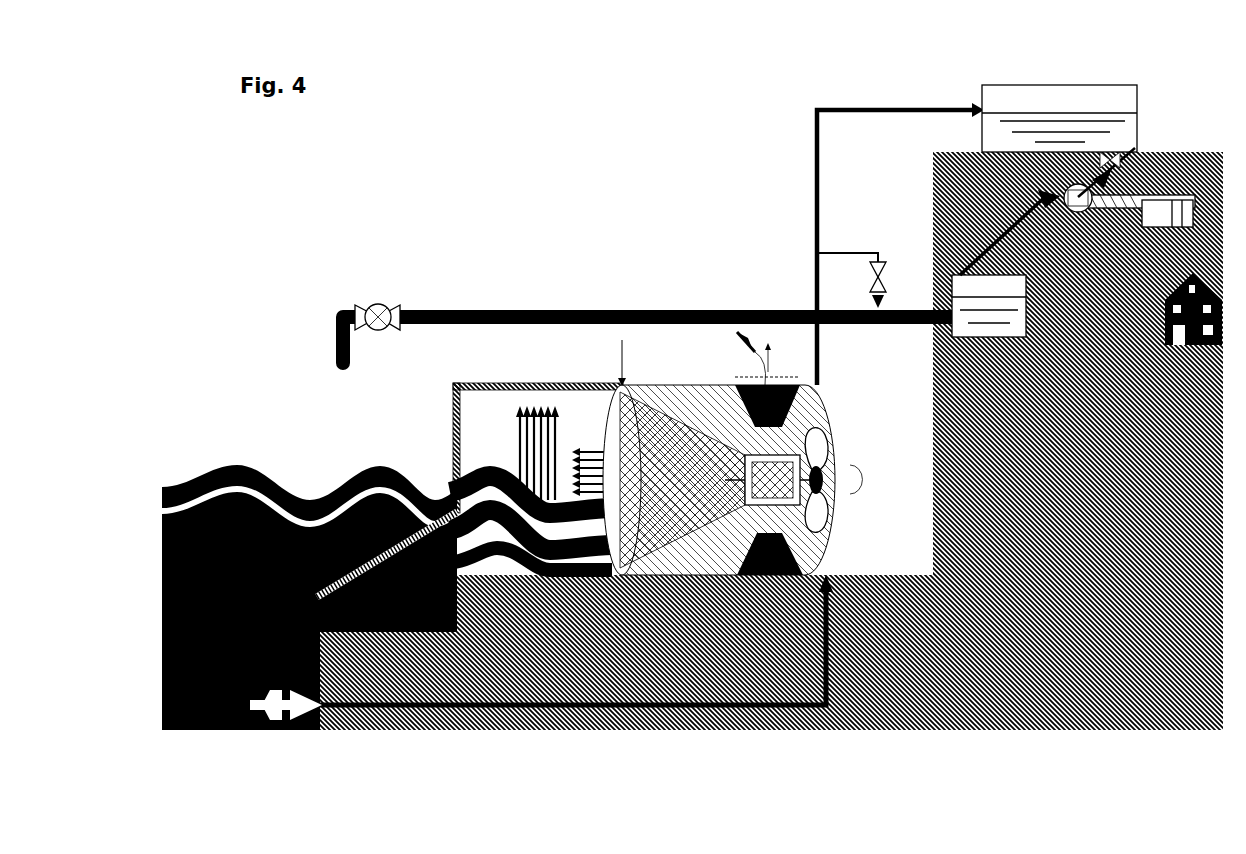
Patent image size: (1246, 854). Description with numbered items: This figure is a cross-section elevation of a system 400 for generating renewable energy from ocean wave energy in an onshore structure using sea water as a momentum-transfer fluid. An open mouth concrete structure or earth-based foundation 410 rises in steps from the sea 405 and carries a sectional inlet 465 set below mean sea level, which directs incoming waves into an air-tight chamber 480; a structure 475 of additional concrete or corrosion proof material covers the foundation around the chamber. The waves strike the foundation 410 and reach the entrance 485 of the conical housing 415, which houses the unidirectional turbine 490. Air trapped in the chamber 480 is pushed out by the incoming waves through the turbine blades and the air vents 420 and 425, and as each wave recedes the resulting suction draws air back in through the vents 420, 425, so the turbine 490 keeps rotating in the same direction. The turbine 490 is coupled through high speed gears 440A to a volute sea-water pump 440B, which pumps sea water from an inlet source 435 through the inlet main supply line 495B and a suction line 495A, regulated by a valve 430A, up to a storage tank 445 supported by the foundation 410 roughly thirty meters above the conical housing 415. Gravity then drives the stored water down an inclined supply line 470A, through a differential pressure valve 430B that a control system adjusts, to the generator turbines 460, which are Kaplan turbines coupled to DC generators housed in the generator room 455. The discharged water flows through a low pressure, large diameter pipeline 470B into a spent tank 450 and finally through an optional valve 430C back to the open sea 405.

The system 400 is at (735, 92).
The sea 405 is at (309, 597).
The concrete structure or earth-based foundation 410 is at (771, 441).
The conical housing 415 is at (645, 387).
The air vent 420 is at (747, 358).
The air vent 425 is at (742, 618).
The valve 430A is at (925, 268).
The differential pressure valve 430B is at (1138, 149).
The valve 430C is at (420, 288).
The inlet source 435 is at (340, 690).
The high speed gears 440A is at (797, 455).
The volute sea-water pump 440B is at (822, 492).
The storage tank 445 is at (1059, 118).
The spent tank 450 is at (982, 340).
The generator room 455 is at (1153, 210).
The generator turbines 460 is at (1098, 195).
The sectional inlet 465 is at (348, 612).
The supply line 470A is at (1090, 185).
The supply line 470B is at (1000, 232).
The structure 475 is at (455, 388).
The air-tight chamber 480 is at (455, 478).
The entrance 485 is at (595, 440).
The unidirectional turbine 490 is at (728, 508).
The suction line 495A is at (819, 155).
The inlet main supply line 495B is at (830, 689).